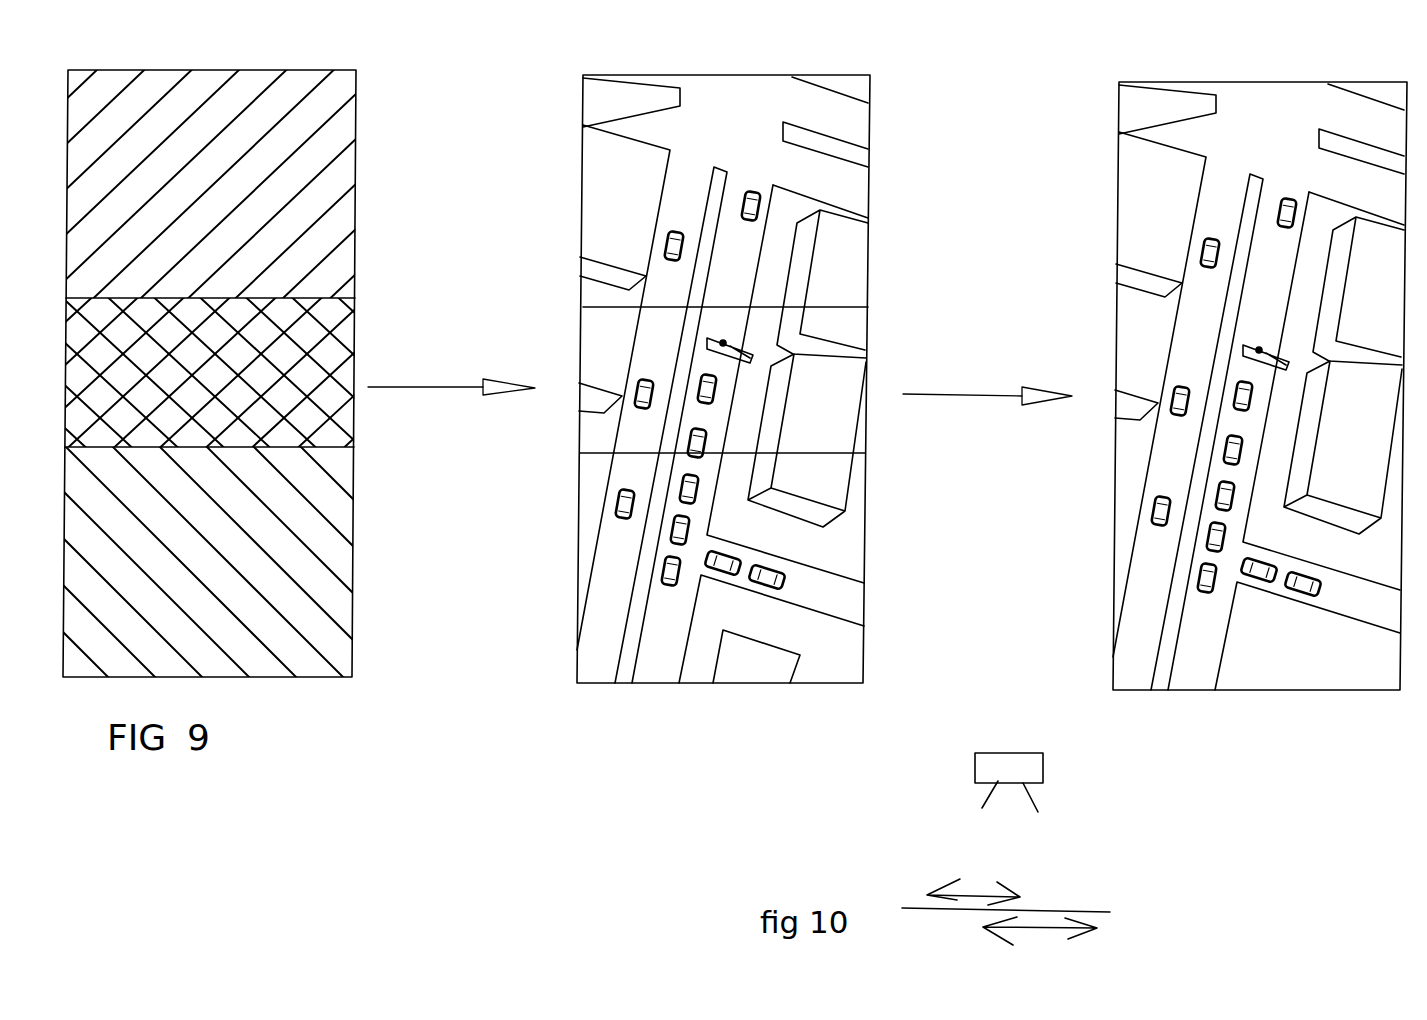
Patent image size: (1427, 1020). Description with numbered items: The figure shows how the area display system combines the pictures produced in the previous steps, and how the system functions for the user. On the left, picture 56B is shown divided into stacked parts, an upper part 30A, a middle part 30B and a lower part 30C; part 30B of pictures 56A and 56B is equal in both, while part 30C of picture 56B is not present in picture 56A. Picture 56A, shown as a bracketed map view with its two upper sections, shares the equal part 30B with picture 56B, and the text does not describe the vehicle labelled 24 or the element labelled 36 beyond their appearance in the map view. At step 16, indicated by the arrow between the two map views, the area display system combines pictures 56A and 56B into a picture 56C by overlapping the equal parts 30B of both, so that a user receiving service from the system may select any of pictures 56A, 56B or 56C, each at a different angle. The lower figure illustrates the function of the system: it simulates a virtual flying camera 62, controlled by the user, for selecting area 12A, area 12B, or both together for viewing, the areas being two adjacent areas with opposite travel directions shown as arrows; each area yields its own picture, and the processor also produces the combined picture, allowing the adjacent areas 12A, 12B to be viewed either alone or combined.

In FIG. 9, the first map layer 30A is at (632, 135).
In FIG. 9, the part 30B is at (648, 386).
In FIG. 9, the part 30C is at (617, 618).
In FIG. 9, the picture 56A is at (873, 455).
In FIG. 9, the picture 56B is at (577, 302).
In FIG. 9, the picture 56C is at (1268, 127).
In FIG. 9, the vehicle 24 is at (733, 413).
In FIG. 9, the map display 36 is at (1162, 132).
In FIG. 9, the step 16 is at (990, 398).
In FIG. 10, the virtual flying camera 62 is at (1013, 766).
In FIG. 10, the area 12A is at (987, 890).
In FIG. 10, the area 12B is at (1032, 928).